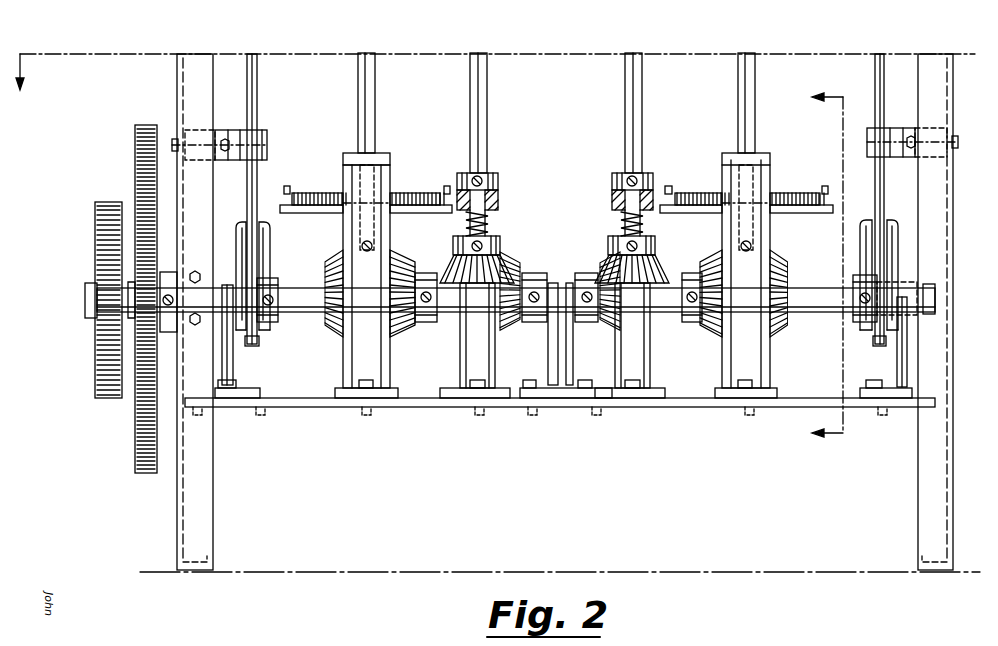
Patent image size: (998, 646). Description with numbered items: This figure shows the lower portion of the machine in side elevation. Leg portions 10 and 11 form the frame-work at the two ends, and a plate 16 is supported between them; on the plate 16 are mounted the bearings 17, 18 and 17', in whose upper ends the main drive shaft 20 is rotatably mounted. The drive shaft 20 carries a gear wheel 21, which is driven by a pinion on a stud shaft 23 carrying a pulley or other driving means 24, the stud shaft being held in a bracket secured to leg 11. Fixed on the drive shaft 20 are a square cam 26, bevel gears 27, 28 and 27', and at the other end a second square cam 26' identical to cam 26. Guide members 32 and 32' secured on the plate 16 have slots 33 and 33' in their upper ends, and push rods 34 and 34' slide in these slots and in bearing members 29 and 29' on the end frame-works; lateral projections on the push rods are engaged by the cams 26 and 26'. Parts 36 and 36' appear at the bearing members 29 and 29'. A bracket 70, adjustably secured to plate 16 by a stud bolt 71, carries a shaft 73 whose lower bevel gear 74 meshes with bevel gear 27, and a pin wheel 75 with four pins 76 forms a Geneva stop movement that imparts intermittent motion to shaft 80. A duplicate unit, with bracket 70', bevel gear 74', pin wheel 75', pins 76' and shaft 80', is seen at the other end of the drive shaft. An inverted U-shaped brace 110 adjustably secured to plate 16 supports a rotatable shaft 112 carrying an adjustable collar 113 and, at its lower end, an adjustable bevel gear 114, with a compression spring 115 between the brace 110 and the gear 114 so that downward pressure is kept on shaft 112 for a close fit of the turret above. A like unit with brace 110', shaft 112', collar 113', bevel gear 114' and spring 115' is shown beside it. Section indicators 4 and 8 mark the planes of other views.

The section line 4- 4 is at (18, 83).
The section line 8- 8 is at (819, 267).
The leg portion 10 is at (191, 80).
The leg portion 11 is at (935, 180).
The plate 16 is at (282, 404).
The bearing 17 is at (238, 341).
The bearing 17' is at (899, 347).
The bearing 18 is at (558, 285).
The main drive shaft 20 is at (318, 281).
The gear wheel 21 is at (135, 144).
The stud shaft 23 is at (88, 290).
The pulley or other driving means 24 is at (100, 230).
The square cam 26 is at (274, 287).
The square cam 26' is at (886, 285).
The bevel gear 27 is at (427, 282).
The bevel gear 27' is at (695, 282).
The bevel gear 28 is at (533, 273).
The bearing member 29 is at (238, 137).
The bearing member 29' is at (903, 133).
The guide member 32 is at (268, 283).
The guide member 32' is at (888, 267).
The slot 33 is at (243, 261).
The slot 33' is at (870, 259).
The push rod 34 is at (267, 200).
The push rod 34' is at (880, 200).
The clamp bolt 36 is at (229, 130).
The clamp bolt 36' is at (906, 124).
The bracket 70 is at (374, 281).
The bearing column 70' is at (756, 262).
The stud bolt 71 is at (364, 380).
The shaft 73 is at (376, 142).
The bevel gear 74 is at (363, 285).
The bevel gear 74' is at (759, 285).
The pin wheel 75 is at (366, 188).
The toothed wheel 75' is at (746, 189).
The pins 76 is at (366, 181).
The pin 76' is at (751, 179).
The shaft 80 is at (379, 103).
The vertical rod 80' is at (763, 103).
The inverted U-shaped brace 110 is at (485, 277).
The bearing column 110' is at (648, 273).
The rotatable shaft 112 is at (495, 113).
The vertical rod 112' is at (658, 113).
The collar 113 is at (490, 164).
The cap 113' is at (649, 161).
The bevel gear 114 is at (489, 276).
The bevel gear 114' is at (646, 250).
The compression spring 115 is at (494, 205).
The spring housing 115' is at (618, 213).